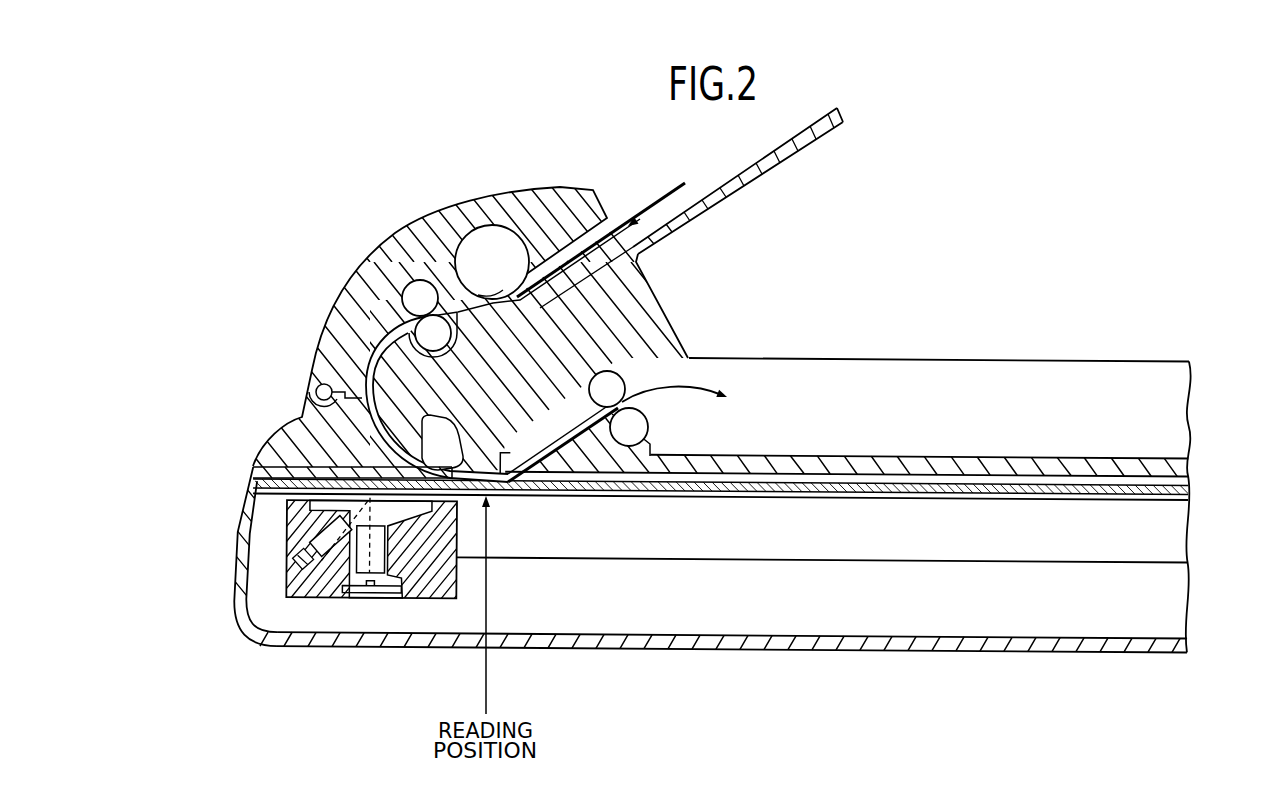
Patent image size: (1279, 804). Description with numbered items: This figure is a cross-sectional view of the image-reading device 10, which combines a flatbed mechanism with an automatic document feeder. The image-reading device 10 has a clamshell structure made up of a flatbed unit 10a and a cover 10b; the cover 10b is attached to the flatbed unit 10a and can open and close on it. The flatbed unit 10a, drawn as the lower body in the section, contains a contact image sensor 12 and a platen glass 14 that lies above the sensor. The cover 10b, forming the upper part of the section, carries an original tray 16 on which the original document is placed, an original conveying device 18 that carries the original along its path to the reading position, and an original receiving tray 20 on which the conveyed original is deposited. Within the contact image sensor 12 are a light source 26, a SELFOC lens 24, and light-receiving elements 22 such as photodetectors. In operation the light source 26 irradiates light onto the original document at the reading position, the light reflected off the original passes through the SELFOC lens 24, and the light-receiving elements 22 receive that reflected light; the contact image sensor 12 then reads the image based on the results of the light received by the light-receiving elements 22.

The image-reading device 10 is at (948, 231).
The flatbed unit 10a is at (1164, 587).
The cover 10b is at (1164, 403).
The contact image sensor 12 is at (359, 607).
The platen glass 14 is at (492, 491).
The original tray 16 is at (729, 186).
The original conveying device 18 is at (358, 286).
The original receiving tray 20 is at (809, 452).
The light-receiving elements 22 is at (379, 578).
The SELFOC lens 24 is at (385, 548).
The light source 26 is at (298, 575).